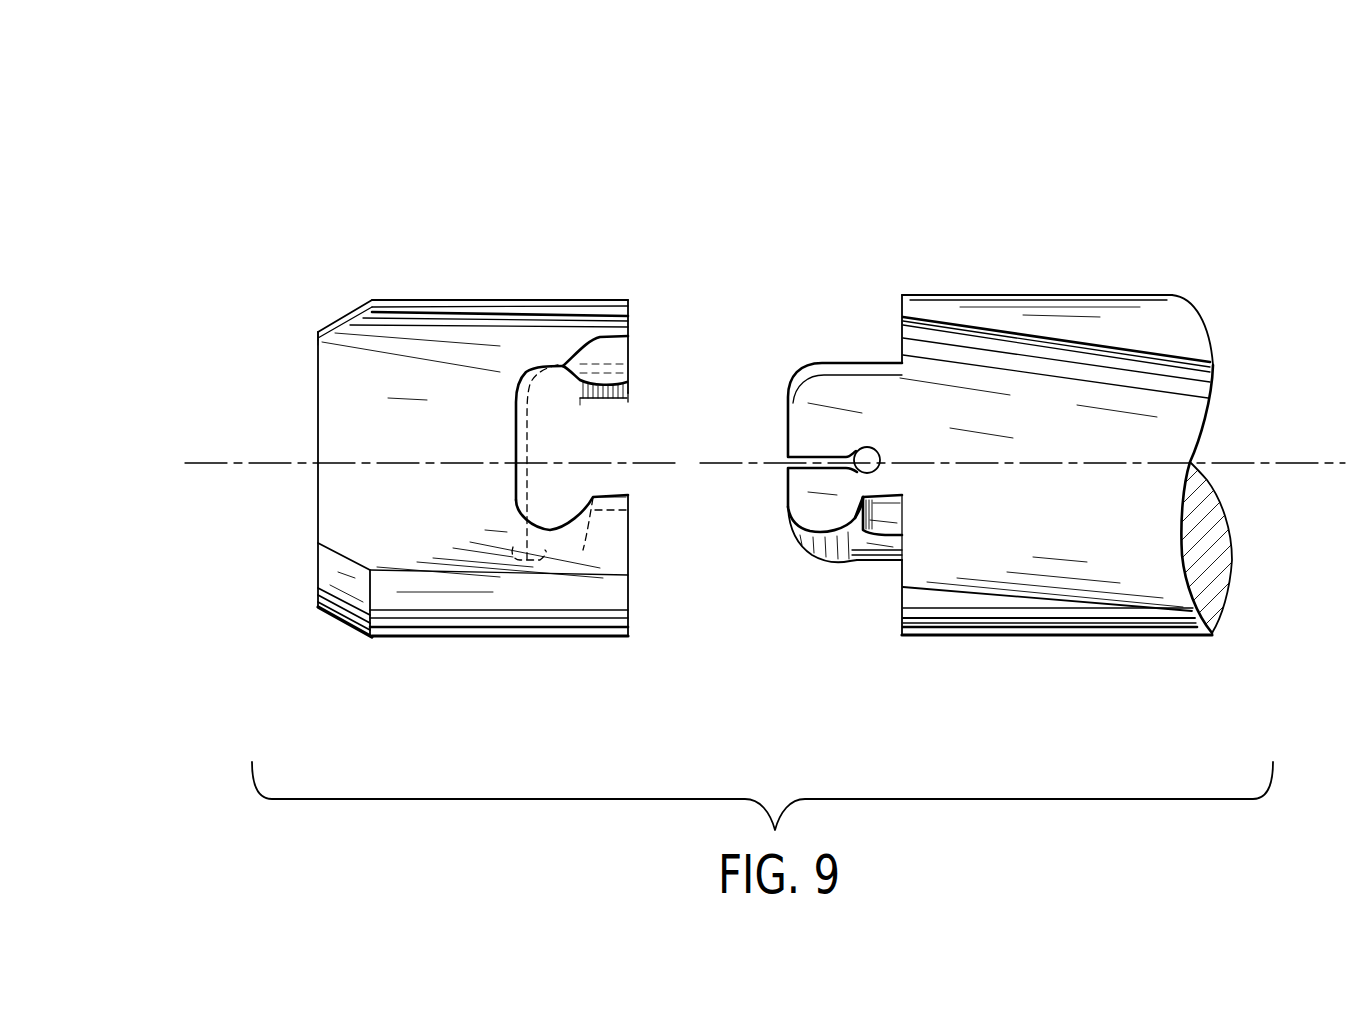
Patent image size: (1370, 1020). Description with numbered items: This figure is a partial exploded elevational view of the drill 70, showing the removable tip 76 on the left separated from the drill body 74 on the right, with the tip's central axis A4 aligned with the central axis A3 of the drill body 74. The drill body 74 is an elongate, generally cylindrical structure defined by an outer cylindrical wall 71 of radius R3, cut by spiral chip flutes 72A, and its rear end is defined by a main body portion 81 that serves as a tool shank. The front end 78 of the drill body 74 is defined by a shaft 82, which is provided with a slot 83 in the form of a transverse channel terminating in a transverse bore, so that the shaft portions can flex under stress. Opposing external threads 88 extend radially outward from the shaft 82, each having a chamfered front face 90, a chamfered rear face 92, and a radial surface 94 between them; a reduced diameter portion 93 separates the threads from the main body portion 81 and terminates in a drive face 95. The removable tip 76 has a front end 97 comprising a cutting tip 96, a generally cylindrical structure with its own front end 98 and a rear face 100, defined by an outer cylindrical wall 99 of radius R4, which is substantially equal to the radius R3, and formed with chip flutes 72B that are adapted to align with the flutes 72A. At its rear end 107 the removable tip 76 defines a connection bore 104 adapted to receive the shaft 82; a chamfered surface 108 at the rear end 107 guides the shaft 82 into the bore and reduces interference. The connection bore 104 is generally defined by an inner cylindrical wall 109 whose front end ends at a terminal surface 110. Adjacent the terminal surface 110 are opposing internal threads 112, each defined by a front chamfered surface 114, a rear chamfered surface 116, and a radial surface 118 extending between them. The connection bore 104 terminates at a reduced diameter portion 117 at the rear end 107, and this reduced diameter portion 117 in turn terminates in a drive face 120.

The drill 70 is at (252, 116).
The removable tip 76 is at (302, 212).
The drill body 74 is at (1168, 166).
The chip flutes 72B is at (356, 384).
The chip flutes 72A is at (1040, 392).
The radius R4 is at (388, 300).
The radius R3 is at (1145, 310).
The outer cylindrical wall 99 is at (456, 311).
The rear face 100 is at (630, 305).
The front chamfered surface 114 is at (540, 392).
The internal thread 112 is at (590, 360).
The drive face 120 is at (595, 379).
The reduced diameter portion 117 is at (625, 402).
The rear end 107 is at (657, 405).
The rear chamfered surface 116 is at (583, 405).
The radial surface 118 is at (545, 395).
The inner cylindrical wall 109 is at (517, 410).
The terminal surface 110 is at (520, 478).
The connection bore 104 is at (676, 531).
The chamfered surface 108 is at (632, 545).
The front end 97 is at (260, 338).
The front end 98 is at (318, 495).
The cutting tip 96 is at (266, 583).
The central axis A4 is at (222, 458).
The central axis A3 is at (1318, 460).
The main body portion 81 is at (1177, 335).
The outer cylindrical wall 71 is at (1141, 612).
The slot 83 is at (839, 440).
The shaft 82 is at (758, 477).
The reduced diameter portion 93 is at (887, 505).
The chamfered rear face 92 is at (882, 508).
The front end 78 is at (770, 527).
The chamfered front face 90 is at (805, 544).
The external thread 88 is at (810, 590).
The radial surface 94 is at (823, 553).
The drive face 95 is at (878, 553).